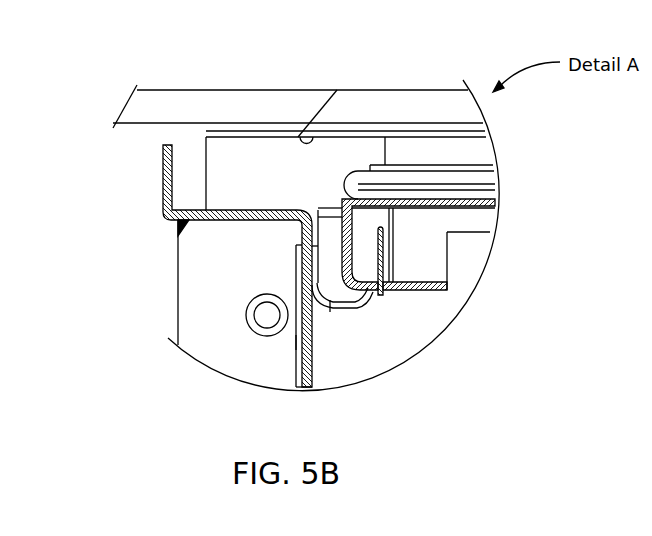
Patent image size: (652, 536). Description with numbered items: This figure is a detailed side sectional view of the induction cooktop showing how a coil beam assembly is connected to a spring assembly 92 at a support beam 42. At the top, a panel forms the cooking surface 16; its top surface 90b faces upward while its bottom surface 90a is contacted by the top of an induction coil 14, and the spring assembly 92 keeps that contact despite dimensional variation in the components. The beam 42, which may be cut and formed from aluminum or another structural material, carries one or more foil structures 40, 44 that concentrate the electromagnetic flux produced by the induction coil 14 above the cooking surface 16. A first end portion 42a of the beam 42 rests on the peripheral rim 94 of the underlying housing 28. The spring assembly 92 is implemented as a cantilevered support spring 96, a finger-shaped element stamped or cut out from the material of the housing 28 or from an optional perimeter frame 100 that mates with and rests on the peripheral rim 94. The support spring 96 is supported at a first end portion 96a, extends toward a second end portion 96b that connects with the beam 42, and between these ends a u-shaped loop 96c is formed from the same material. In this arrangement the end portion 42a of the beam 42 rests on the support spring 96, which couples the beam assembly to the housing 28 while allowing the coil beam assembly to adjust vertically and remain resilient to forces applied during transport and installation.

The induction coil 14 is at (447, 137).
The cooking surface 16 is at (368, 90).
The housing 28 is at (178, 236).
The foil structure 40 is at (476, 174).
The trim layer 44 is at (490, 183).
The beam 42 is at (493, 202).
The first end portion 42a is at (430, 290).
The bottom surface 90a is at (300, 134).
The top surface 90b is at (250, 90).
The spring assembly 92 is at (374, 313).
The peripheral rim 94 is at (292, 339).
The support spring 96 is at (353, 308).
The first end portion 96a is at (317, 246).
The second end portion 96b is at (385, 248).
The u-shaped loop 96c is at (331, 312).
The perimeter frame 100 is at (163, 170).